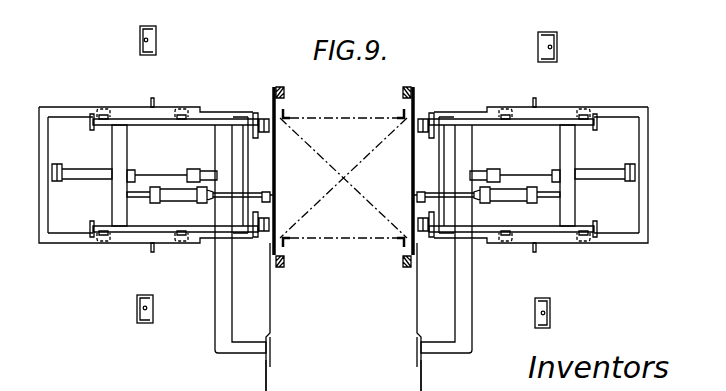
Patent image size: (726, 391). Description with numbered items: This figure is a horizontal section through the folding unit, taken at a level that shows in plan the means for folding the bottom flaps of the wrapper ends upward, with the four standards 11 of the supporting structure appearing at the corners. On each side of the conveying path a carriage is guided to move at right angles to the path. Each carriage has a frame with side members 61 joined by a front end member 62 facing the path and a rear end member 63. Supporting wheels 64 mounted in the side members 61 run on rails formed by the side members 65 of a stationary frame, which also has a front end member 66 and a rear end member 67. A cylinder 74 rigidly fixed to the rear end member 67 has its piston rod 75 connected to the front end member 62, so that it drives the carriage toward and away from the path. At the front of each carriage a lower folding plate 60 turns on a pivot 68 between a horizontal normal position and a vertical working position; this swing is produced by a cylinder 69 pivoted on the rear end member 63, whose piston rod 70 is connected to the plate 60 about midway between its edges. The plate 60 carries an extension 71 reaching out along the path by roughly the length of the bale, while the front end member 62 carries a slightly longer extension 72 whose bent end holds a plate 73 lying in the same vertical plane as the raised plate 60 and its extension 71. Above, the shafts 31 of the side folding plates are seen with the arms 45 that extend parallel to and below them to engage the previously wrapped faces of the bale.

The standard 11 is at (156, 42).
The shaft 31 is at (286, 93).
The arm 45 is at (290, 117).
The lower folding plate 60 is at (277, 160).
The side member 61 is at (162, 126).
The front end member 62 is at (222, 142).
The rear end member 63 is at (122, 153).
The supporting wheel 64 is at (104, 108).
The side member 65 is at (133, 110).
The front end member 66 is at (247, 160).
The rear end member 67 is at (44, 140).
The pivot 68 is at (262, 113).
The cylinder 69 is at (183, 198).
The piston rod 70 is at (217, 198).
The extension 71 is at (272, 328).
The extension 72 is at (225, 325).
The plate 73 is at (268, 378).
The cylinder 74 is at (90, 172).
The piston rod 75 is at (167, 175).